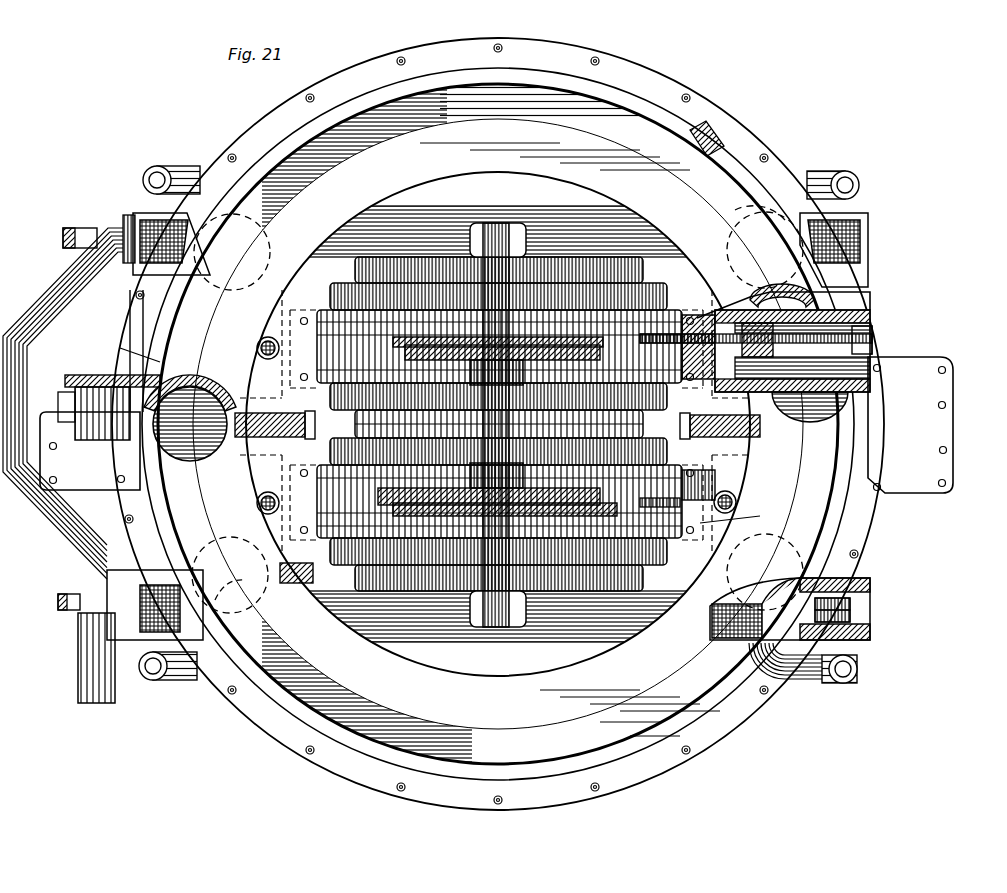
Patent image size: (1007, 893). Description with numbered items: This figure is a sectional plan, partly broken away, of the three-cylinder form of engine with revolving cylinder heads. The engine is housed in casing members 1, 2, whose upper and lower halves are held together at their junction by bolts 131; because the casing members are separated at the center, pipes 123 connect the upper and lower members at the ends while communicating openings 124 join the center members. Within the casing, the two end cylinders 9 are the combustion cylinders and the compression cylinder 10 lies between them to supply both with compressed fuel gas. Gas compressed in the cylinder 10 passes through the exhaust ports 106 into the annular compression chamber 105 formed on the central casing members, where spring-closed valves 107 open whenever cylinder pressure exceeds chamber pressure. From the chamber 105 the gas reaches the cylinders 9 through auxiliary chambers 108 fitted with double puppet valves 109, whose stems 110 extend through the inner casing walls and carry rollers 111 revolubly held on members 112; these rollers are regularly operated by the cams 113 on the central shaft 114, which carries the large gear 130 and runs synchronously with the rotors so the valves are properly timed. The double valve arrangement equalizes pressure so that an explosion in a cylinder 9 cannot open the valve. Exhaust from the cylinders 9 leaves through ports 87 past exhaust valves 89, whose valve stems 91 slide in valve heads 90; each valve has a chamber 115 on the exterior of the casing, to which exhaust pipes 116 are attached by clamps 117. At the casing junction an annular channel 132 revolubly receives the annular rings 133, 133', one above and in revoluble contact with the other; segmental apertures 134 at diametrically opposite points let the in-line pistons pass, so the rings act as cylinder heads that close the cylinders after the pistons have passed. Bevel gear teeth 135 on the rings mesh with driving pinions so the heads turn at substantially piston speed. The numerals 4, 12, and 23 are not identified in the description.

The casing member 1 is at (534, 632).
The casing member 2 is at (252, 128).
The bearing housing cap 4 is at (848, 306).
The combustion cylinder 9 is at (264, 256).
The compression cylinder 10 is at (500, 485).
The bearing race 12 is at (746, 306).
The mounting plate 23 is at (318, 260).
The port 87 is at (785, 658).
The exhaust valve 89 is at (862, 630).
The valve head 90 is at (868, 619).
The valve stem 91 is at (868, 603).
The annular compression chamber 105 is at (120, 478).
The exhaust port 106 is at (196, 370).
The valve 107 is at (112, 376).
The auxiliary chamber 108 is at (870, 360).
The double puppet valve 109 is at (778, 364).
The valve stem 110 is at (688, 358).
The roller 111 is at (646, 352).
The member 112 is at (642, 336).
The cam 113 is at (542, 356).
The central shaft 114 is at (492, 322).
The chamber 115 is at (154, 220).
The exhaust pipe 116 is at (72, 628).
The clamp 117 is at (66, 405).
The pipe 123 is at (200, 170).
The communicating opening 124 is at (262, 342).
The large gear 130 is at (372, 552).
The bolt 131 is at (591, 61).
The annular channel 132 is at (126, 354).
The annular ring 133 is at (244, 602).
The annular ring 133' is at (498, 424).
The segmental aperture 134 is at (714, 176).
The bevel gear teeth 135 is at (718, 146).